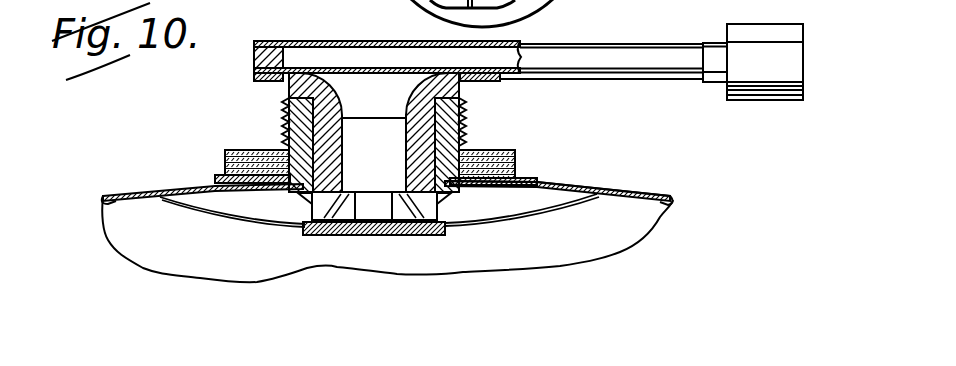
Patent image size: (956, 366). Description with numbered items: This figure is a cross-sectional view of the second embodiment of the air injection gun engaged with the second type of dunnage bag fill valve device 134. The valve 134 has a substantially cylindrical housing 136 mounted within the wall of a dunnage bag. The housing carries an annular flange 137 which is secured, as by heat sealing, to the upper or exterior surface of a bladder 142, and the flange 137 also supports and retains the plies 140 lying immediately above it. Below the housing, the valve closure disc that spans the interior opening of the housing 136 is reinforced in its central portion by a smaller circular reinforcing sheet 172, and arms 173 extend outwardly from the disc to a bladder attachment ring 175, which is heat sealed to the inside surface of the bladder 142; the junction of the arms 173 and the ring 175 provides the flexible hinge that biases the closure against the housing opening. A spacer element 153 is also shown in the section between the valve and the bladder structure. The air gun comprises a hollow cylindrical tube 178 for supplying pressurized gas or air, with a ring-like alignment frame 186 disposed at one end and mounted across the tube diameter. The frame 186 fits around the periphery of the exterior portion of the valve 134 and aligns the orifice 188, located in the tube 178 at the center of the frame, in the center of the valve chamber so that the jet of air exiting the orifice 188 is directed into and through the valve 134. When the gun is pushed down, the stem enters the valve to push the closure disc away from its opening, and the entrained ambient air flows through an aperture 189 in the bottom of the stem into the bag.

The dunnage bag fill valve device 134 is at (233, 113).
The valve housing 136 is at (468, 131).
The annular flange 137 is at (537, 173).
The plies 140 is at (513, 158).
The bladder 142 is at (637, 192).
The spacer block 153 is at (440, 202).
The circular reinforcing sheet 172 is at (346, 235).
The arms 173 is at (252, 225).
The bladder attachment ring 175 is at (146, 203).
The hollow cylindrical tube 178 is at (600, 73).
The ring-like alignment frame 186 is at (487, 82).
The orifice 188 is at (377, 73).
The aperture 189 is at (368, 212).